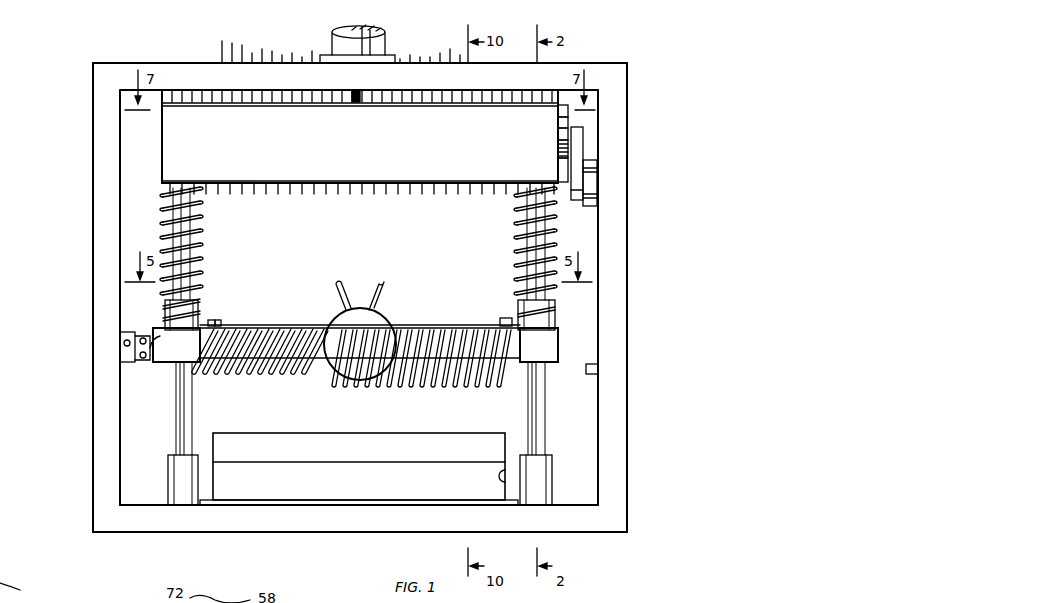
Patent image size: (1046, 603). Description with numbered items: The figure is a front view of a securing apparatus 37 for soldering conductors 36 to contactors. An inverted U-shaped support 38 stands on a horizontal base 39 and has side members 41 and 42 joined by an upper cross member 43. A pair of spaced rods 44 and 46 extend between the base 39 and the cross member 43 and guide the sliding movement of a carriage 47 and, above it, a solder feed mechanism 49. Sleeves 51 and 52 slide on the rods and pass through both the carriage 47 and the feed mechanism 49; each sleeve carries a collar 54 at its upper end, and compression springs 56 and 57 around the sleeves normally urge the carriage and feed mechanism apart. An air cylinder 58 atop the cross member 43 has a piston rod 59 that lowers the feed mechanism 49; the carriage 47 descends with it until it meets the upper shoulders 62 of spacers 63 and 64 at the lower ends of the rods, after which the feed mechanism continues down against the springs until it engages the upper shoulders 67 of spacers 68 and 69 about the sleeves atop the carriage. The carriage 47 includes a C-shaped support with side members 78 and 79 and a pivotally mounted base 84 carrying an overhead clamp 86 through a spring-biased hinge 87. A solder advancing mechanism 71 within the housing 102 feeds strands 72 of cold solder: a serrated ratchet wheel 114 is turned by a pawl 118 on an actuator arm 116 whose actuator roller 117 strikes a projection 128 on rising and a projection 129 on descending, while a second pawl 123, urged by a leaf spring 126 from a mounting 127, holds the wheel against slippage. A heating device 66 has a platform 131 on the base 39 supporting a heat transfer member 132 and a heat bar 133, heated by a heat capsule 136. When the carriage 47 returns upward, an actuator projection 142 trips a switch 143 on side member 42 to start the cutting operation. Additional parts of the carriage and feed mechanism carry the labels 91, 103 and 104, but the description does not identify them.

The conductors 36 is at (500, 382).
The securing apparatus 37 is at (662, 52).
The inverted U-shaped support 38 is at (618, 225).
The horizontal base 39 is at (356, 530).
The side member 41 is at (616, 240).
The side member 42 is at (98, 222).
The upper cross member 43 is at (206, 60).
The rod 44 is at (544, 400).
The rod 46 is at (188, 412).
The carriage 47 is at (572, 336).
The solder feed mechanism 49 is at (299, 144).
The sleeve 51 is at (515, 243).
The sleeve 52 is at (199, 248).
The collar 54 is at (206, 97).
The compression spring 56 is at (520, 228).
The compression spring 57 is at (200, 218).
The air cylinder 58 is at (386, 38).
The piston rod 59 is at (364, 96).
The upper shoulder 62 is at (168, 456).
The spacer 63 is at (544, 478).
The spacer 64 is at (176, 474).
The heating device 66 is at (364, 448).
The upper shoulder 67 is at (196, 300).
The spacer 68 is at (554, 318).
The spacer 69 is at (168, 322).
The solder advancing mechanism 71 is at (622, 167).
The solder strands 72 is at (358, 196).
The side member 78 is at (560, 346).
The side member 79 is at (170, 362).
The base 84 is at (214, 320).
The overhead clamp 86 is at (440, 324).
The spring-biased hinge 87 is at (222, 322).
The clamp 91 is at (506, 318).
The housing 102 is at (168, 164).
The head top plate 103 is at (180, 106).
The head bottom plate 104 is at (165, 184).
The serrated ratchet wheel 114 is at (570, 148).
The actuator arm 116 is at (578, 200).
The actuator roller 117 is at (590, 194).
The pawl 118 is at (563, 172).
The second pawl 123 is at (568, 134).
The leaf spring 126 is at (568, 122).
The mounting 127 is at (568, 110).
The projection 128 is at (583, 178).
The projection 129 is at (598, 368).
The platform 131 is at (452, 528).
The heat transfer member 132 is at (366, 434).
The heat bar 133 is at (416, 433).
The heat capsule 136 is at (508, 470).
The actuator projection 142 is at (140, 362).
The switch 143 is at (127, 356).